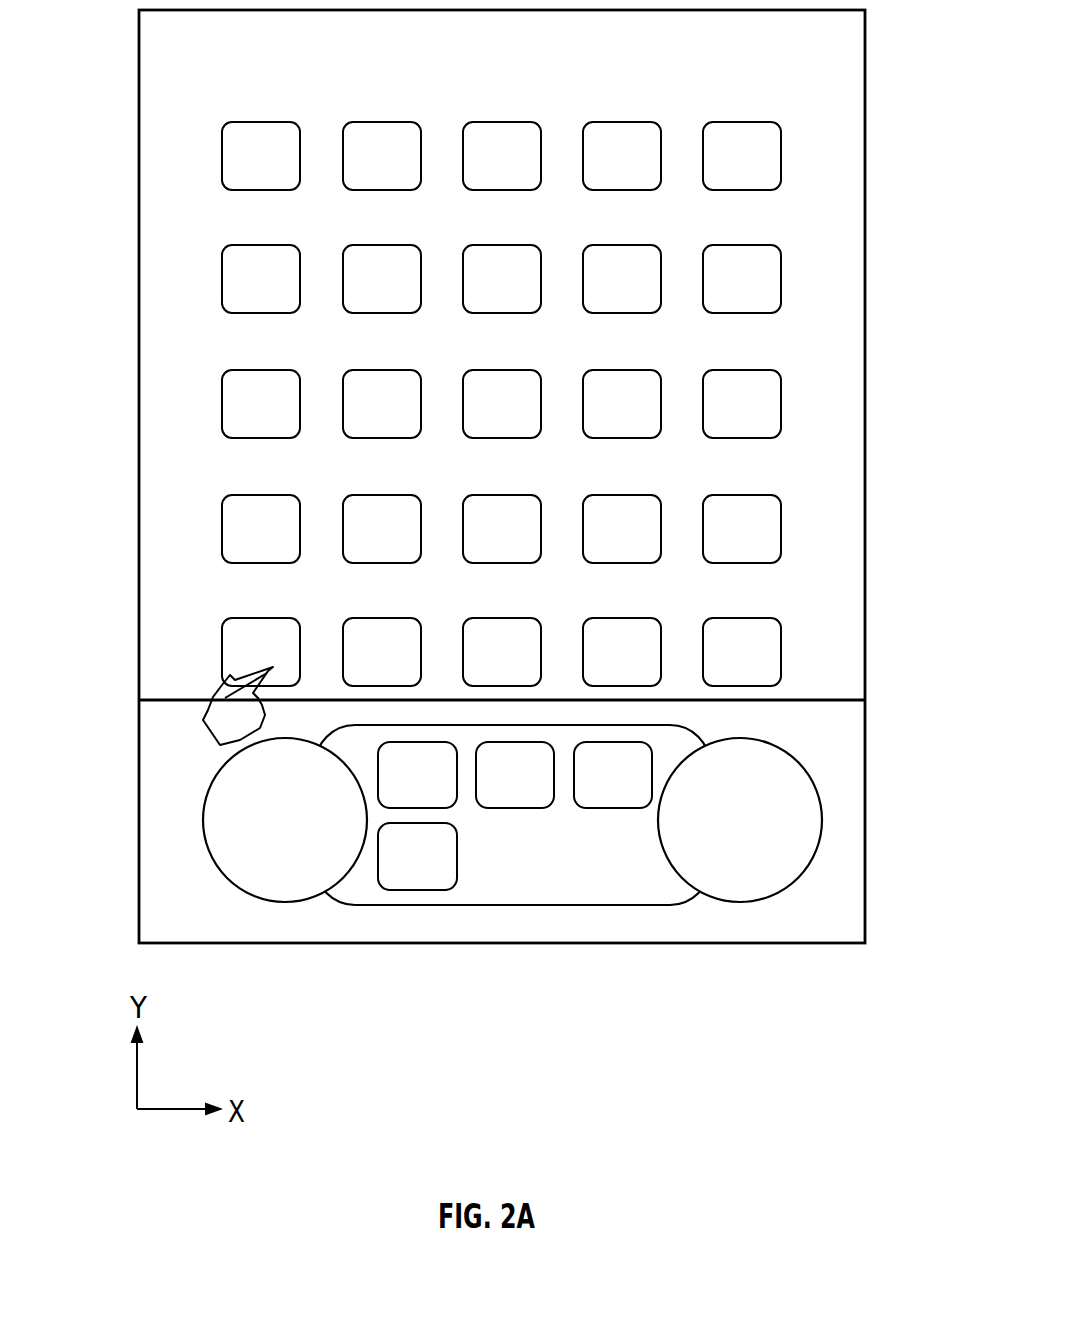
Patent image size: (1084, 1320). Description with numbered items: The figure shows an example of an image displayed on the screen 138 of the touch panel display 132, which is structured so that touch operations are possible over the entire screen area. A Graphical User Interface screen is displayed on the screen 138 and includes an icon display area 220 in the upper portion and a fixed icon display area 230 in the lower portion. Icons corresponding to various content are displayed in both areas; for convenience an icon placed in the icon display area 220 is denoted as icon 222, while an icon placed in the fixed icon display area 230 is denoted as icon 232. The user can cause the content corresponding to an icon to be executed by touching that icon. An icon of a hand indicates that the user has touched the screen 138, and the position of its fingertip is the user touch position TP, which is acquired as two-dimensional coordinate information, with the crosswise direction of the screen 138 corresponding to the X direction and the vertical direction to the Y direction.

The screen 138 is at (152, 92).
The touch panel display 132 is at (139, 225).
The icon display area 220 is at (850, 647).
The icon 222 is at (262, 618).
The user touch position TP is at (272, 667).
The fixed icon display area 230 is at (650, 905).
The icon 232 is at (612, 808).